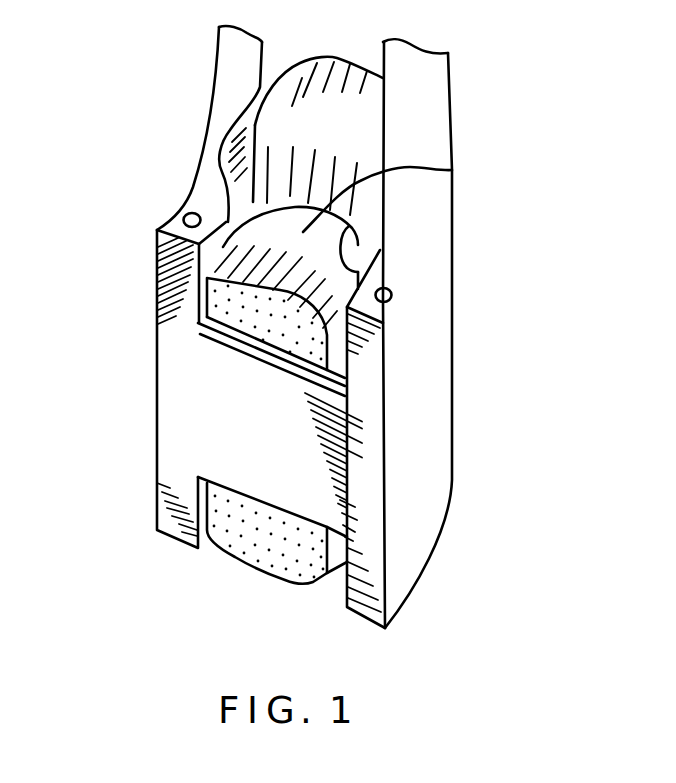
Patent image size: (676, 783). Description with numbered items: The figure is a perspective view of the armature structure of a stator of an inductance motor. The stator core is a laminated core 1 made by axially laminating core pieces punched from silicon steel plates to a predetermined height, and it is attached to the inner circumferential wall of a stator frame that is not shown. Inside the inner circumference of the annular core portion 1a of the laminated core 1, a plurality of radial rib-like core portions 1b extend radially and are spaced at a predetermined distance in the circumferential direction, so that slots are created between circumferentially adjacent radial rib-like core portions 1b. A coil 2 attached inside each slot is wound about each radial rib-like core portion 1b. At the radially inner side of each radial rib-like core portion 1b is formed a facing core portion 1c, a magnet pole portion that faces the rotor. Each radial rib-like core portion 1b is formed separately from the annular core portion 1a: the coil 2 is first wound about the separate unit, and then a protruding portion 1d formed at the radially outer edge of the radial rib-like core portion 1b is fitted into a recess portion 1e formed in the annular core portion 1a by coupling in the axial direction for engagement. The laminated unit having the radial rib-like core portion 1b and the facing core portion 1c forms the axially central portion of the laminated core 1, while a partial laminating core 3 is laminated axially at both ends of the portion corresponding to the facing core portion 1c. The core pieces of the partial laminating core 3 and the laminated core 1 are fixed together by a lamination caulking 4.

The laminated core 1 is at (128, 398).
The annular core portion 1a is at (417, 495).
The radial rib-like core portion 1b is at (272, 467).
The facing core portion 1c is at (174, 355).
The protruding portion 1d is at (340, 373).
The recess portion 1e is at (348, 226).
The coil 2 is at (383, 323).
The partial laminating core 3 is at (163, 279).
The lamination caulking 4 is at (193, 214).